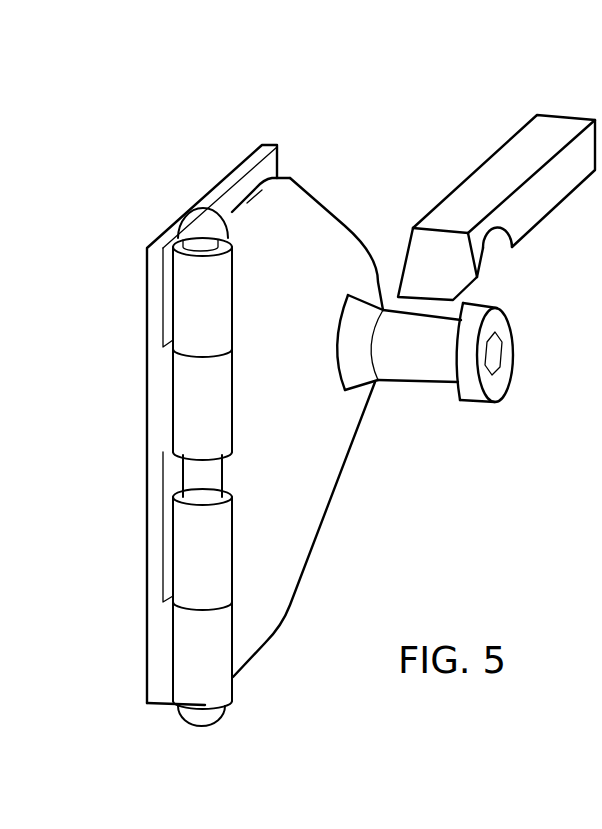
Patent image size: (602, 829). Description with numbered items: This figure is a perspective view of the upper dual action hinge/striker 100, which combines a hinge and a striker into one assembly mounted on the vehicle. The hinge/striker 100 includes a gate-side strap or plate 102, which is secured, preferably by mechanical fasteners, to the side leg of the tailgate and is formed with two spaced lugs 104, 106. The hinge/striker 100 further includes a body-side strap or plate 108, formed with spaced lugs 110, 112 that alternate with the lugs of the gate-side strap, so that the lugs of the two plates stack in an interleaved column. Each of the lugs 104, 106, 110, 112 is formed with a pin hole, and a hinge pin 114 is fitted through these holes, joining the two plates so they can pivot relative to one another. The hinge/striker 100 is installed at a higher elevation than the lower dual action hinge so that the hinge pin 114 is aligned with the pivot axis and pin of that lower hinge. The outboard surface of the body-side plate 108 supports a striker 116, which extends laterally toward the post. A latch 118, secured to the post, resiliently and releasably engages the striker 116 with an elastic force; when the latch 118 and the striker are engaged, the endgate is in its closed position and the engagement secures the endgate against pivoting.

The upper hinge/striker 100 is at (248, 115).
The gate-side strap or plate 102 is at (148, 318).
The lug 104 is at (197, 392).
The lug 106 is at (178, 650).
The body-side strap or plate 108 is at (305, 532).
The lug 110 is at (195, 283).
The lug 112 is at (197, 553).
The hinge pin 114 is at (203, 222).
The striker 116 is at (427, 383).
The latch 118 is at (488, 183).